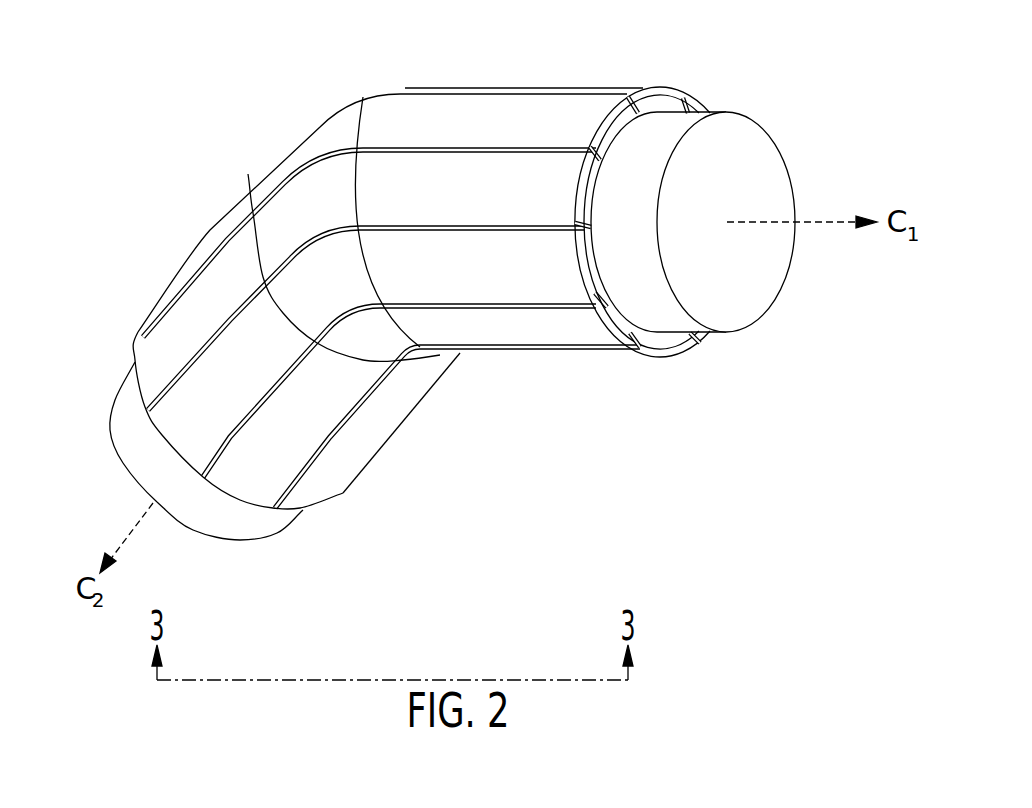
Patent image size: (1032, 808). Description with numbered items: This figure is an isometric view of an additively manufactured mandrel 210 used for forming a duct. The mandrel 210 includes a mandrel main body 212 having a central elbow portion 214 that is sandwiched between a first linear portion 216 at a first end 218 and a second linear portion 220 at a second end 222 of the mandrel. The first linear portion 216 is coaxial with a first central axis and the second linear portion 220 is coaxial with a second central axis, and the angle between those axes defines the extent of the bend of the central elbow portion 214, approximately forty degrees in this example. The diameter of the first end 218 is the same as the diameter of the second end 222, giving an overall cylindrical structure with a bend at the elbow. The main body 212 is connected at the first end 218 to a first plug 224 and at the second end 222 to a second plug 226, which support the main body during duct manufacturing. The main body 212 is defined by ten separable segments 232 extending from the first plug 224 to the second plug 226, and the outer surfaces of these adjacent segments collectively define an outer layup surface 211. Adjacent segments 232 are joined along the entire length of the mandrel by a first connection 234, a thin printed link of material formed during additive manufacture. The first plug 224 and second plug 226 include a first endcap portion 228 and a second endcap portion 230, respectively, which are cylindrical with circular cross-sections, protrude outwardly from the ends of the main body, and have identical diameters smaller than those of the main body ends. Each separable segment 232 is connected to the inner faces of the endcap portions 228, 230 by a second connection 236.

The mandrel 210 is at (437, 103).
The outer layup surface 211 is at (327, 297).
The mandrel main body 212 is at (487, 110).
The central elbow portion 214 is at (327, 143).
The first linear portion 216 is at (567, 110).
The first end 218 is at (613, 107).
The second linear portion 220 is at (160, 338).
The second end 222 is at (148, 413).
The first plug 224 is at (765, 168).
The second plug 226 is at (150, 485).
The first endcap portion 228 is at (763, 257).
The second endcap portion 230 is at (370, 110).
The separable segments 232 is at (533, 318).
The first connection 234 is at (483, 308).
The second connection 236 is at (648, 343).